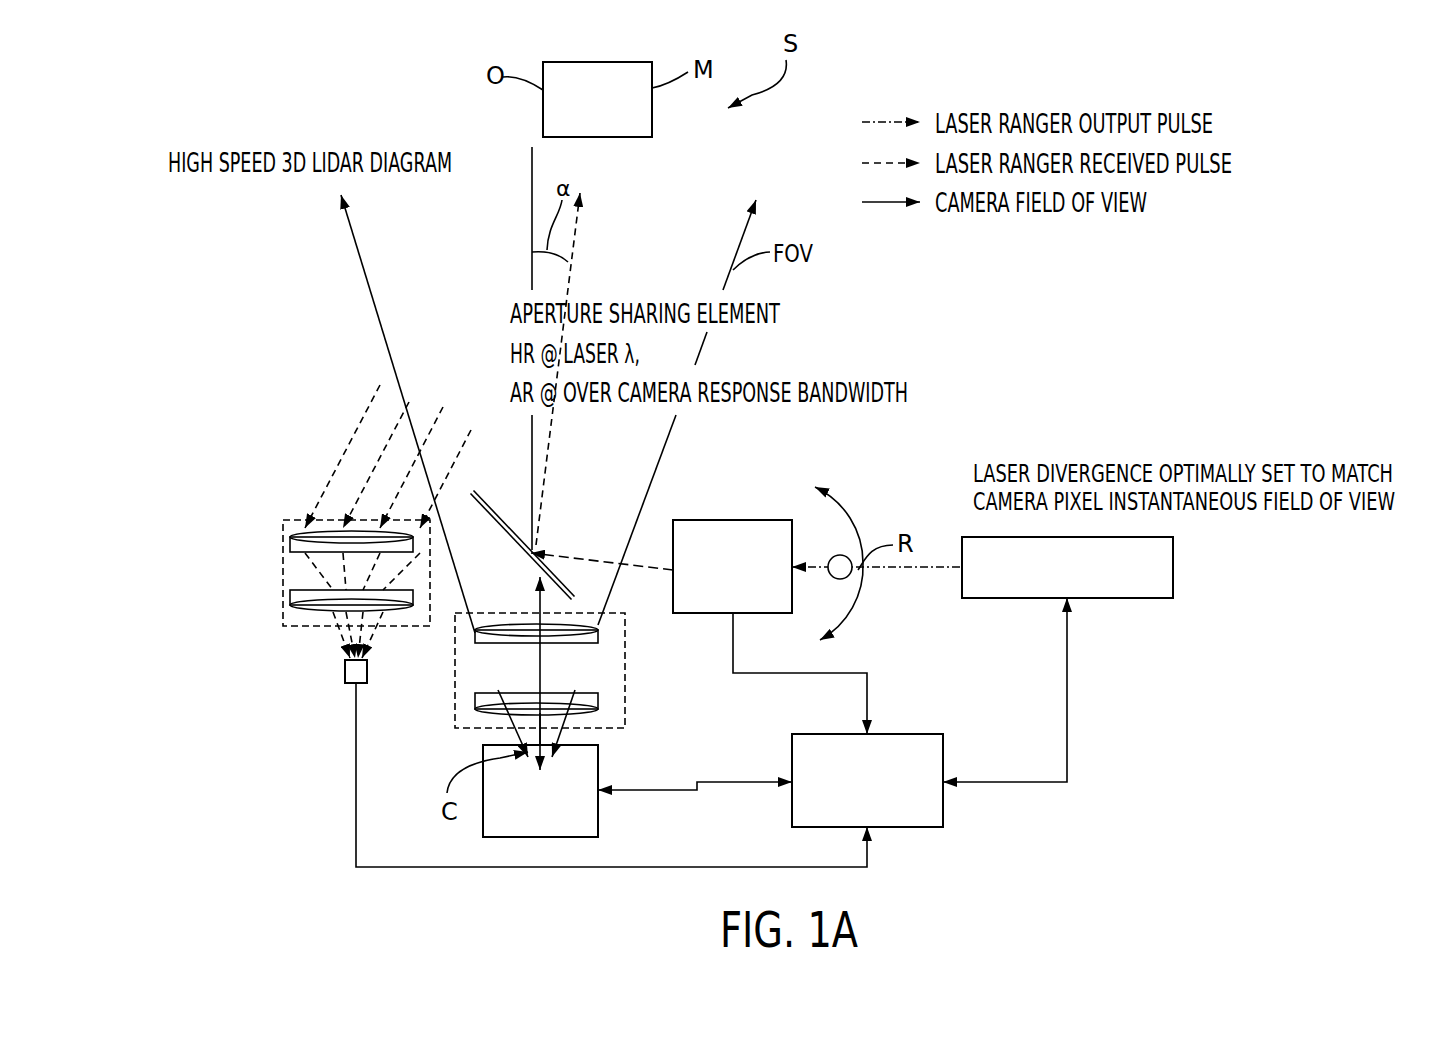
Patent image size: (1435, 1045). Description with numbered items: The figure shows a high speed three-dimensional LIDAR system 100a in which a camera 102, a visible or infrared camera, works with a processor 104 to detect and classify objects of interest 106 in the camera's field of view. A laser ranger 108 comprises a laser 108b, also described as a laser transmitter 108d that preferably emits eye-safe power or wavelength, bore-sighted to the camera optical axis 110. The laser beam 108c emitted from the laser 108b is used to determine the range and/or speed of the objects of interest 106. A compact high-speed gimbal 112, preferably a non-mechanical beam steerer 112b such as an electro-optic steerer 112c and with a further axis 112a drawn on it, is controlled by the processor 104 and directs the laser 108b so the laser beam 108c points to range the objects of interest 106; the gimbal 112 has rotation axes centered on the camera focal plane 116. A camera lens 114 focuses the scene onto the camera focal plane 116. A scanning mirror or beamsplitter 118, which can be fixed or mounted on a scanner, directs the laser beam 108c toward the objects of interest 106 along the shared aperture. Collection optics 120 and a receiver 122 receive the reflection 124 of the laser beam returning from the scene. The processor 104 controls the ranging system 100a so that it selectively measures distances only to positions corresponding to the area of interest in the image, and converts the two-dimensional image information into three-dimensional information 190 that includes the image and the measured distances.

The high speed 3D LIDAR system 100a is at (217, 295).
The camera 102 is at (525, 828).
The processor 104 is at (933, 757).
The objects of interest 106 is at (612, 112).
The laser ranger 108 is at (1063, 382).
The laser 108b is at (1137, 588).
The laser beam 108c is at (583, 235).
The laser transmitter 108d is at (1173, 575).
The camera optical axis 110 is at (532, 220).
The compact high-speed gimbal 112 is at (712, 604).
The gimbal axis 112a is at (720, 520).
The non-mechanical beam steerer 112b is at (695, 520).
The electro-optic steerer 112c is at (748, 520).
The camera lens 114 is at (598, 703).
The camera focal plane 116 is at (598, 773).
The beamsplitter 118 is at (532, 548).
The collection optics 120 is at (282, 568).
The receiver 122 is at (342, 672).
The reflection of the laser beam 124 is at (358, 424).
The 3-dimensional information 190 is at (945, 812).